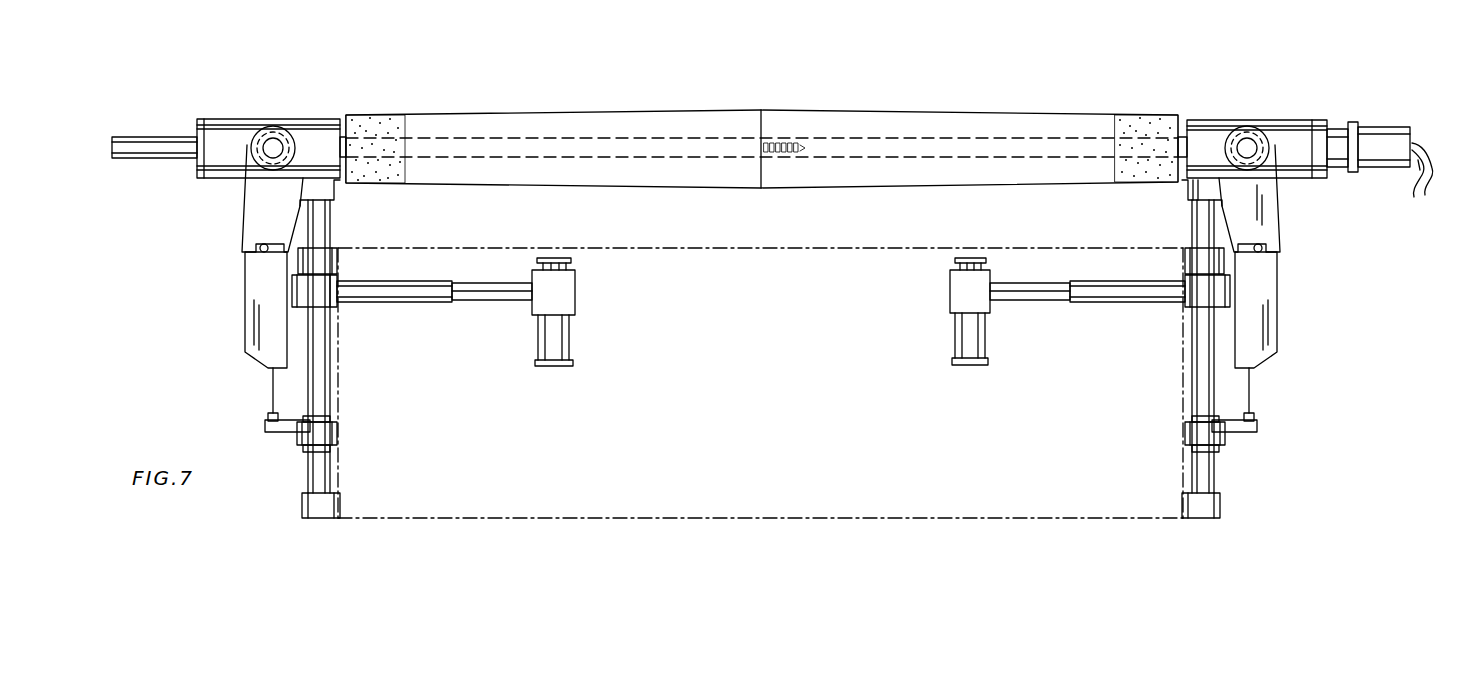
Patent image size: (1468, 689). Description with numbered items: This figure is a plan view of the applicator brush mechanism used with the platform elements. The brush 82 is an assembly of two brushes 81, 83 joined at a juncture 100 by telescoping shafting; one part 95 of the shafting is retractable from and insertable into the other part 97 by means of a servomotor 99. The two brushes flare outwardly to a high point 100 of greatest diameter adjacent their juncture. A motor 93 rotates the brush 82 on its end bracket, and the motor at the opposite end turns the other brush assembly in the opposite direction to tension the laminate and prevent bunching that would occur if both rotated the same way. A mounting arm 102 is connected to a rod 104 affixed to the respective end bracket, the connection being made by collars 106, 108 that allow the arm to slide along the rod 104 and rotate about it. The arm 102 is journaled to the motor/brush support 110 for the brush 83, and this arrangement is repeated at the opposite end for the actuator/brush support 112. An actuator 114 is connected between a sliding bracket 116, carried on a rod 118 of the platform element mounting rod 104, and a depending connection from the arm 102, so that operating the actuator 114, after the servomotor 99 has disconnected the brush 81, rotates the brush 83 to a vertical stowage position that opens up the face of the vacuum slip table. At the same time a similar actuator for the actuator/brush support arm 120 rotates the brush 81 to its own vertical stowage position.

The brush 81 is at (540, 112).
The brush 82 is at (745, 108).
The brush 83 is at (1020, 112).
The motor 93 is at (1385, 160).
The telescoping shaft part 95 is at (342, 116).
The telescoping shaft part 97 is at (1181, 120).
The servomotor 99 is at (148, 136).
The juncture 100 is at (760, 192).
The mounting arm 102 is at (1272, 216).
The rod 104 is at (1210, 470).
The collar 106 is at (1190, 198).
The collar 108 is at (1188, 362).
The motor/brush support 110 is at (1302, 123).
The actuator/brush support 112 is at (233, 117).
The actuator 114 is at (1100, 295).
The sliding bracket 116 is at (950, 295).
The rod 118 is at (987, 340).
The actuator/brush support arm 120 is at (246, 206).